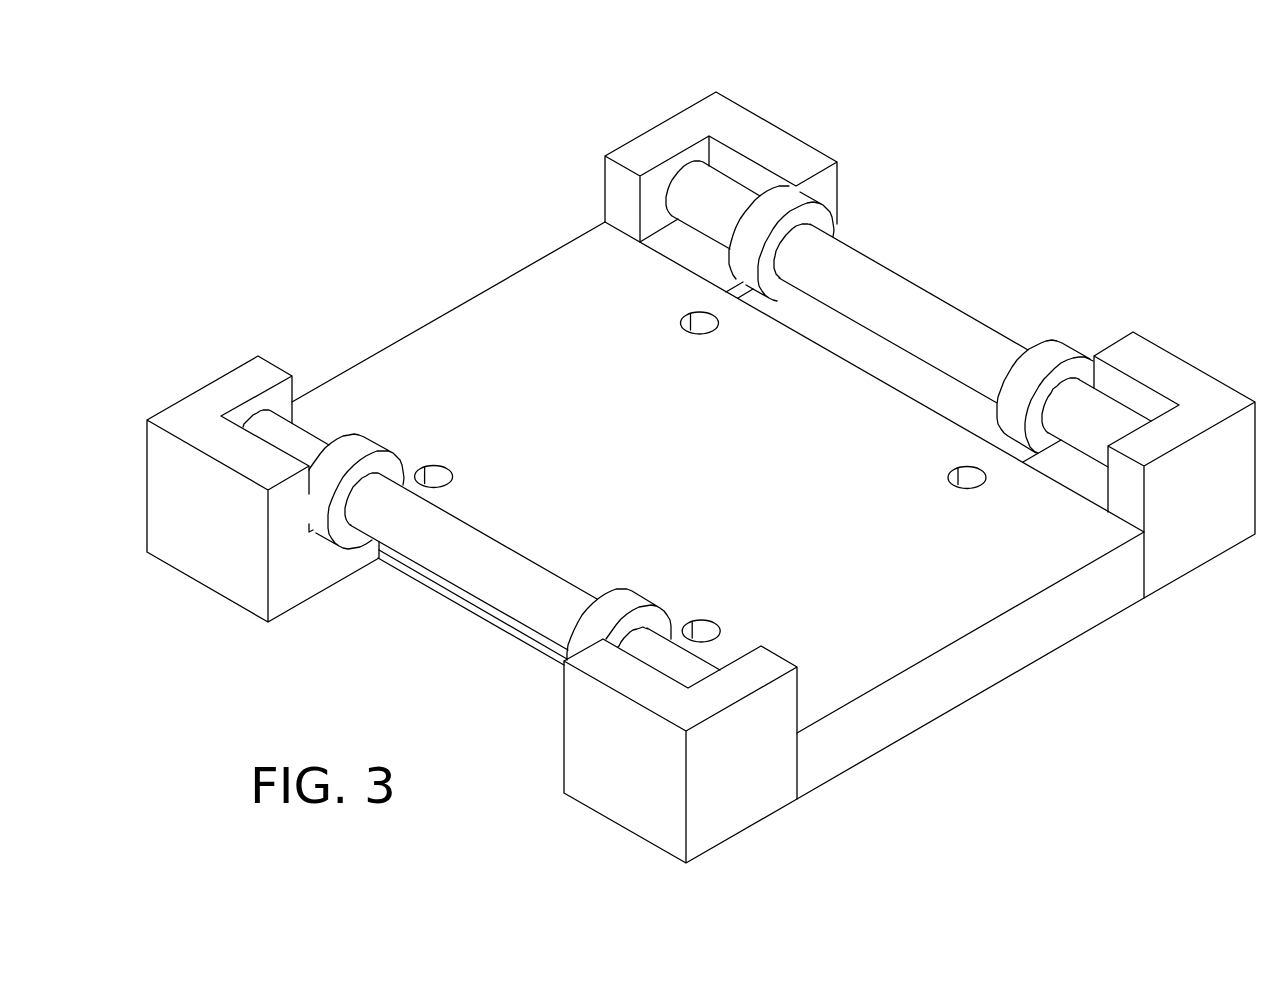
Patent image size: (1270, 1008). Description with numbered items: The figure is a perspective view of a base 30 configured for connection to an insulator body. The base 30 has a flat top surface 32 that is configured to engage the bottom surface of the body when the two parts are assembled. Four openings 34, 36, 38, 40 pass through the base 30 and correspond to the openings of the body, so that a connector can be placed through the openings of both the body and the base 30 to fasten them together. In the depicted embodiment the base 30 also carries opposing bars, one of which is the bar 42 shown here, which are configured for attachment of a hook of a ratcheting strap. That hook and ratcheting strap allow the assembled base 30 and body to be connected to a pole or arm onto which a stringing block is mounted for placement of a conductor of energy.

The base 30 is at (892, 132).
The flat top surface 32 is at (446, 326).
The opening 34 is at (713, 623).
The opening 36 is at (958, 470).
The opening 38 is at (448, 470).
The opening 40 is at (690, 312).
The bar 42 is at (884, 279).